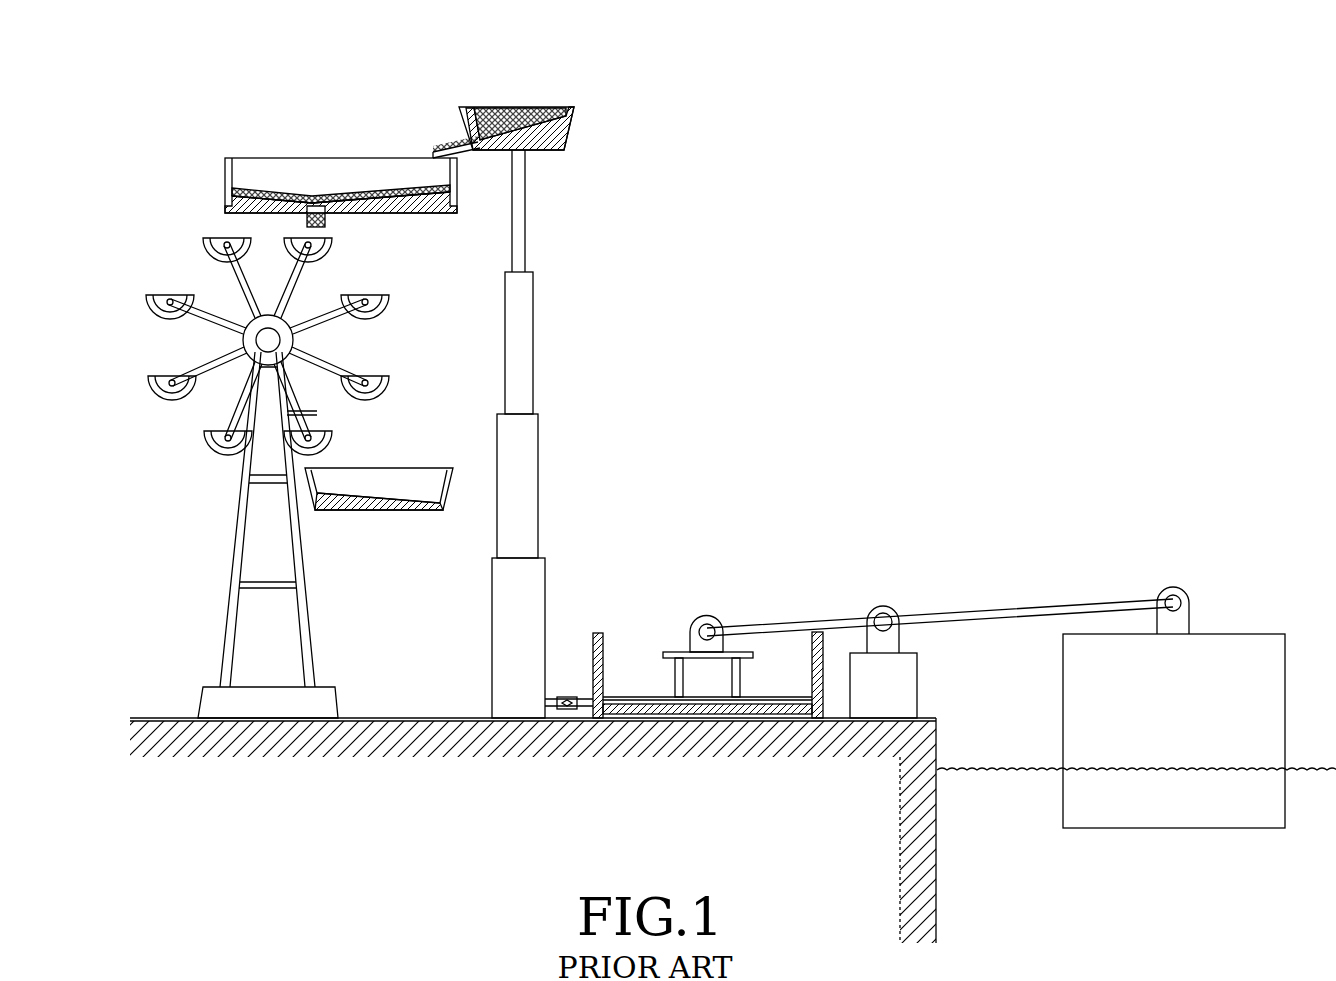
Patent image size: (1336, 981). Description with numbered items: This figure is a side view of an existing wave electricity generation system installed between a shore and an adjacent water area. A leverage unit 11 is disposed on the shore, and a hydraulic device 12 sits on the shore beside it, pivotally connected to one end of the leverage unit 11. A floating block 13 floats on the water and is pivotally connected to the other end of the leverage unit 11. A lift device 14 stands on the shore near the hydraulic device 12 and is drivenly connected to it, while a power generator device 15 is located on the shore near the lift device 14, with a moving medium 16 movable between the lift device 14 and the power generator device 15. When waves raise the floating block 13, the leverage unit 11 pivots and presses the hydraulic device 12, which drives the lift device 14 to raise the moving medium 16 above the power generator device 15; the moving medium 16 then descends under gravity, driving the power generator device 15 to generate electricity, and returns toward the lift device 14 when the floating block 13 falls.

The leverage unit 11 is at (891, 589).
The hydraulic device 12 is at (664, 635).
The floating block 13 is at (1240, 660).
The lift device 14 is at (556, 488).
The power generator device 15 is at (207, 603).
The moving medium 16 is at (538, 110).